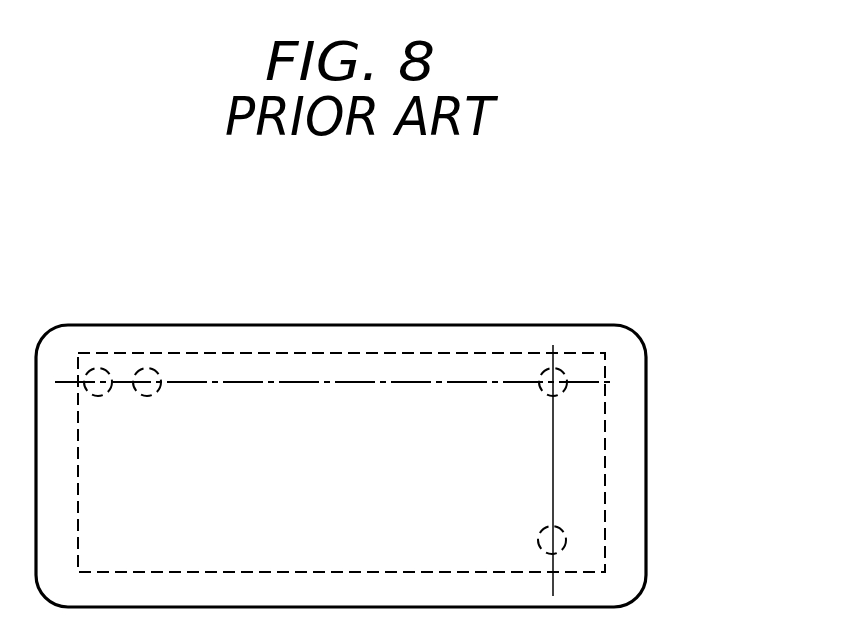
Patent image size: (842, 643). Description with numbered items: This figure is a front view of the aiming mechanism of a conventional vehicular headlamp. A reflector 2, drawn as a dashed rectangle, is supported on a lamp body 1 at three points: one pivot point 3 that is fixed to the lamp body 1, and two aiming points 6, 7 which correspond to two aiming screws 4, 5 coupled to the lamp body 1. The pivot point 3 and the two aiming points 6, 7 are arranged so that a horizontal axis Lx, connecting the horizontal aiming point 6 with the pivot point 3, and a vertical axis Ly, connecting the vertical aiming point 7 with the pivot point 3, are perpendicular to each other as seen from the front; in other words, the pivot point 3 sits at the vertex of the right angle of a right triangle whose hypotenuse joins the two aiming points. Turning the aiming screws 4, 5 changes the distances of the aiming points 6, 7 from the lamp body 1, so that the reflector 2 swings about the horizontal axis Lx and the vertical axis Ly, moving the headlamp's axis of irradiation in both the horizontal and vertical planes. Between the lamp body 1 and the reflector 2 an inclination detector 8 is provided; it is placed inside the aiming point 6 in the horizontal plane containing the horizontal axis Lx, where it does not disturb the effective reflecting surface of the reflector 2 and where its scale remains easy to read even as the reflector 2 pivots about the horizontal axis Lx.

The lamp body 1 is at (509, 326).
The reflector 2 is at (296, 352).
The pivot point 3 is at (600, 375).
The aiming screw 4 is at (97, 320).
The aiming screw 5 is at (651, 541).
The horizontal aiming point 6 is at (99, 350).
The vertical aiming point 7 is at (600, 533).
The inclination detector 8 is at (150, 350).
The horizontal axis Lx is at (392, 382).
The vertical axis Ly is at (553, 478).